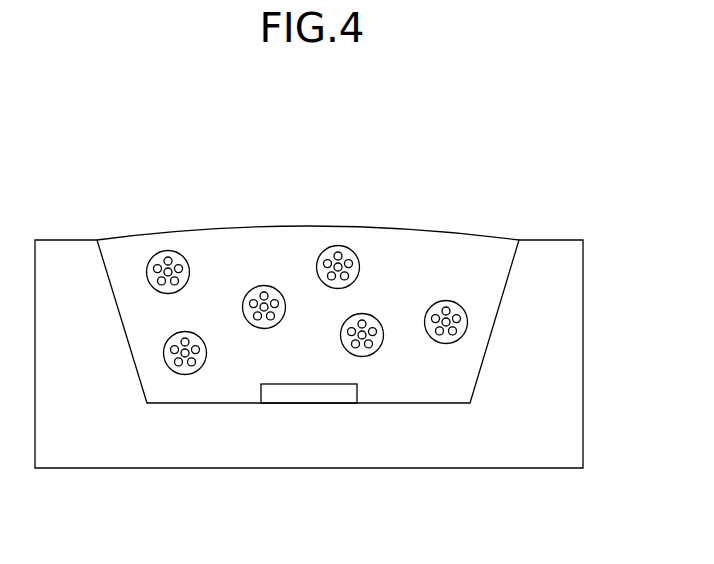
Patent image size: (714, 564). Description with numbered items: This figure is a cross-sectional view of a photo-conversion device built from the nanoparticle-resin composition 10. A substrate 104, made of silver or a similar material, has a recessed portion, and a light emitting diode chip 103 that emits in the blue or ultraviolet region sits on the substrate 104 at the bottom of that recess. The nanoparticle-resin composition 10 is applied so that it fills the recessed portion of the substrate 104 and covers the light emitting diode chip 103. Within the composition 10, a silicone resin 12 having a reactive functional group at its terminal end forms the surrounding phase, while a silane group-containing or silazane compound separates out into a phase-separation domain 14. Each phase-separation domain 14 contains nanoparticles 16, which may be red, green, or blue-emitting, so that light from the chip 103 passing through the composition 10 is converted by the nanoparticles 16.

The nanoparticle-resin composition 10 is at (141, 210).
The silicone resin 12 is at (241, 250).
The phase-separation domain 14 is at (348, 252).
The nanoparticle 16 is at (443, 303).
The light emitting diode chip 103 is at (312, 395).
The substrate 104 is at (412, 448).